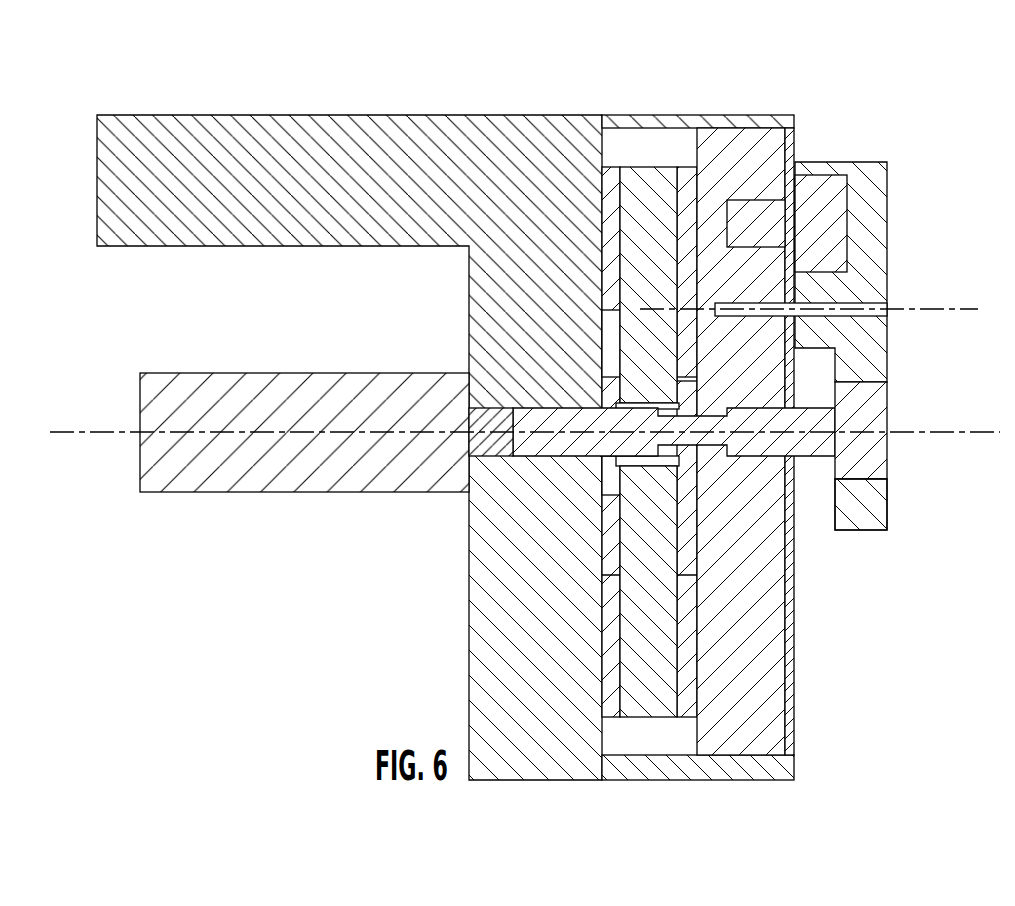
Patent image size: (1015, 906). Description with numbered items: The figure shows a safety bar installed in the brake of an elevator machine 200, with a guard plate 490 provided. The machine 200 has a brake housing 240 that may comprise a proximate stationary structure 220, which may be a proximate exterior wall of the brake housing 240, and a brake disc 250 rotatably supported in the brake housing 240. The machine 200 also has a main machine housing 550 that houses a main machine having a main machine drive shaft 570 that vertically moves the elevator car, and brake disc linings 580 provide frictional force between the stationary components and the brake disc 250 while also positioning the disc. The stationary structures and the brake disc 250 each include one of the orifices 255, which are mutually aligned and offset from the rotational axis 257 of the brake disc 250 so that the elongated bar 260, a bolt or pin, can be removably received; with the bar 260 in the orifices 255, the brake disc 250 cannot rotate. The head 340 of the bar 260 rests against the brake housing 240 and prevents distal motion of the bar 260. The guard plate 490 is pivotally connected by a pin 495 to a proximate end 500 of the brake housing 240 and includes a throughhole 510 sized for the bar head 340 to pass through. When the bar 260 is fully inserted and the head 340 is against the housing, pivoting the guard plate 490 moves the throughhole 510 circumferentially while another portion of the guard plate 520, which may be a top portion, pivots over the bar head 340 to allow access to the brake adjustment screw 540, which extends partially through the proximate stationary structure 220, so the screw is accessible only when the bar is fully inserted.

The elevator machine 200 is at (525, 409).
The proximate stationary structure 220 is at (757, 707).
The brake housing 240 is at (794, 130).
The brake disc 250 is at (644, 182).
The orifices 255 is at (503, 456).
The rotational axis 257 is at (85, 430).
The elongated bar 260 is at (522, 407).
The head 340 is at (887, 446).
The guard plate 490 is at (860, 519).
The pin 495 is at (886, 302).
The proximate end 500 is at (797, 586).
The throughhole 510 is at (887, 491).
The portion of the guard plate 520 is at (835, 163).
The brake adjustment screw 540 is at (847, 222).
The main machine housing 550 is at (470, 592).
The main machine drive shaft 570 is at (290, 473).
The brake disc linings 580 is at (610, 192).